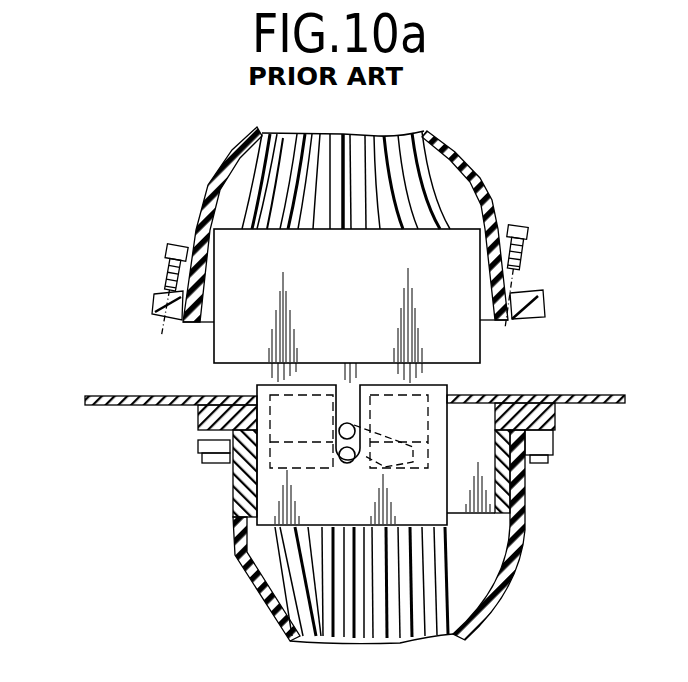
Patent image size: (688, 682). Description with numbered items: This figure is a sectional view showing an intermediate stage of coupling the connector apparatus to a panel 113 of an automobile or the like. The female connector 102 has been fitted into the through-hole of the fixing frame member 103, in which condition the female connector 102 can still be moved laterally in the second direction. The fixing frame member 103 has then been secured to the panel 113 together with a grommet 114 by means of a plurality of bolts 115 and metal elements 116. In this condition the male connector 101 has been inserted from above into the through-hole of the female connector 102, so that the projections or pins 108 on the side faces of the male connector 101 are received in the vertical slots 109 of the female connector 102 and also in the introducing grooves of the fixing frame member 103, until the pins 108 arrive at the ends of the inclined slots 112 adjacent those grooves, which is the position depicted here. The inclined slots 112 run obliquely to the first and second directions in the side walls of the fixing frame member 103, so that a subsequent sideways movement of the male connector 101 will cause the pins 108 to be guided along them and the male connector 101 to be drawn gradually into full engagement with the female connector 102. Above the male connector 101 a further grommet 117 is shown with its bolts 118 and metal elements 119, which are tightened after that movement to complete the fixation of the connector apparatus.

The male connector 101 is at (482, 341).
The female connector 102 is at (432, 520).
The fixing frame member 103 is at (204, 457).
The projections or pins 108 is at (340, 429).
The vertical slots 109 is at (340, 459).
The inclined slots 112 is at (377, 470).
The panel 113 is at (103, 395).
The grommet 114 is at (507, 580).
The bolts 115 is at (539, 464).
The metal elements 116 is at (555, 446).
The grommet 117 is at (480, 182).
The bolts 118 is at (526, 248).
The metal elements 119 is at (545, 297).